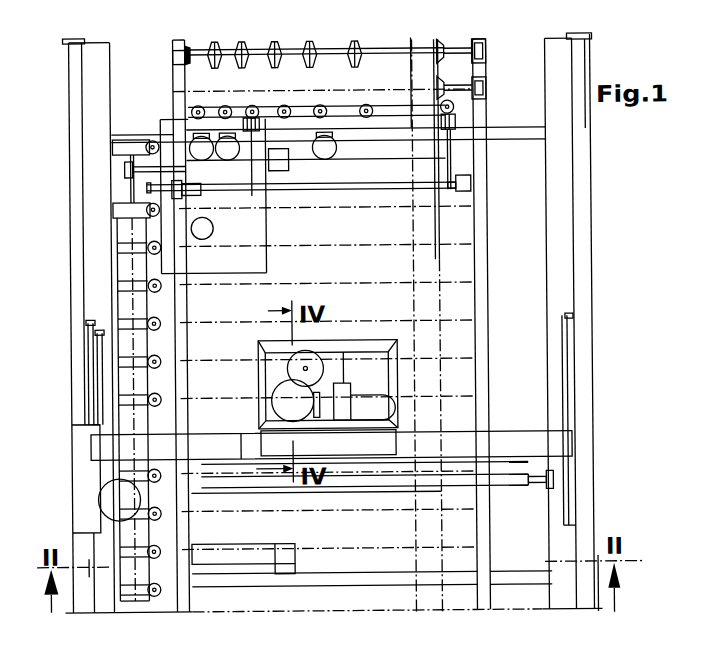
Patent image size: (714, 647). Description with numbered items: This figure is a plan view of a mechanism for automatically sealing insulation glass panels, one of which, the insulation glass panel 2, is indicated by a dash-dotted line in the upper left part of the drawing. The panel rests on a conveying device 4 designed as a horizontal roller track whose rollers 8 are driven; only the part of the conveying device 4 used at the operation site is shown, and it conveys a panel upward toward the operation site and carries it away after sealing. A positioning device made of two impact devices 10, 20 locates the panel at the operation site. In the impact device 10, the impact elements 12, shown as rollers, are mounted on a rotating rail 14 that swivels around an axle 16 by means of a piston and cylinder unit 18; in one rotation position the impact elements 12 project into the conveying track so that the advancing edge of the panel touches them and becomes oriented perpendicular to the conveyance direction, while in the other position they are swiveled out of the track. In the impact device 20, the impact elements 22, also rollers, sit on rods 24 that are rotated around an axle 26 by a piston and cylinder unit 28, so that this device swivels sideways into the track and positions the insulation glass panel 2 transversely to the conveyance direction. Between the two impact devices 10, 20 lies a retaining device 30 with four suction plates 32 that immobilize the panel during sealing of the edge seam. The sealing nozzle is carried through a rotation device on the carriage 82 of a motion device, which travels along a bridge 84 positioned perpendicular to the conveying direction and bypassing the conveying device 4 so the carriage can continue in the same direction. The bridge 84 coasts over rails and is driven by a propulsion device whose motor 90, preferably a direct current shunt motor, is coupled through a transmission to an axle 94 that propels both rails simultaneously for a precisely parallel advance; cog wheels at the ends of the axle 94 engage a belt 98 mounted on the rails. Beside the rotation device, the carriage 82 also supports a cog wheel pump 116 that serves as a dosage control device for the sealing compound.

The insulation glass panel 2 is at (258, 217).
The conveying device 4 is at (374, 38).
The rollers 8 is at (316, 44).
The impact device 10 is at (190, 102).
The impact elements 12 is at (324, 104).
The rotating rail 14 is at (383, 106).
The axle 16 is at (373, 183).
The piston and cylinder unit 18 is at (457, 117).
The impact device 20 is at (149, 128).
The impact elements 22 is at (162, 326).
The rods 24 is at (170, 372).
The axle 26 is at (133, 273).
The piston and cylinder unit 28 is at (227, 550).
The retaining device 30 is at (231, 170).
The suction plates 32 is at (208, 238).
The carriage 82 is at (372, 352).
The bridge 84 is at (506, 437).
The motor 90 is at (118, 498).
The axle 94 is at (501, 488).
The belt 98 is at (582, 389).
The cog wheel pump 116 is at (380, 468).